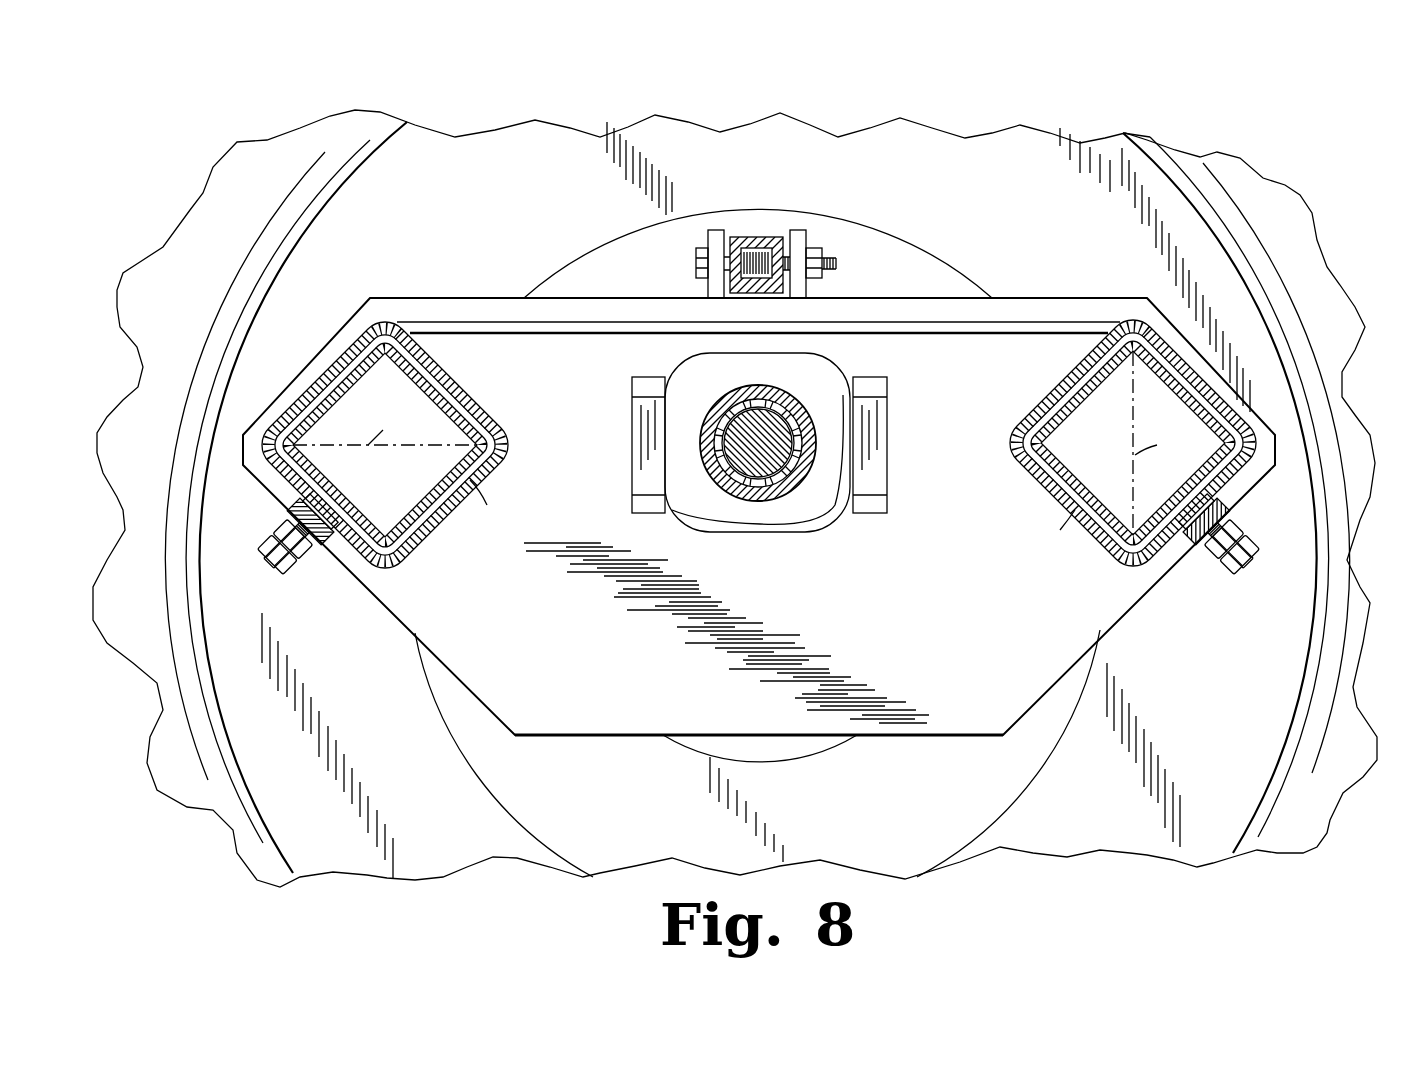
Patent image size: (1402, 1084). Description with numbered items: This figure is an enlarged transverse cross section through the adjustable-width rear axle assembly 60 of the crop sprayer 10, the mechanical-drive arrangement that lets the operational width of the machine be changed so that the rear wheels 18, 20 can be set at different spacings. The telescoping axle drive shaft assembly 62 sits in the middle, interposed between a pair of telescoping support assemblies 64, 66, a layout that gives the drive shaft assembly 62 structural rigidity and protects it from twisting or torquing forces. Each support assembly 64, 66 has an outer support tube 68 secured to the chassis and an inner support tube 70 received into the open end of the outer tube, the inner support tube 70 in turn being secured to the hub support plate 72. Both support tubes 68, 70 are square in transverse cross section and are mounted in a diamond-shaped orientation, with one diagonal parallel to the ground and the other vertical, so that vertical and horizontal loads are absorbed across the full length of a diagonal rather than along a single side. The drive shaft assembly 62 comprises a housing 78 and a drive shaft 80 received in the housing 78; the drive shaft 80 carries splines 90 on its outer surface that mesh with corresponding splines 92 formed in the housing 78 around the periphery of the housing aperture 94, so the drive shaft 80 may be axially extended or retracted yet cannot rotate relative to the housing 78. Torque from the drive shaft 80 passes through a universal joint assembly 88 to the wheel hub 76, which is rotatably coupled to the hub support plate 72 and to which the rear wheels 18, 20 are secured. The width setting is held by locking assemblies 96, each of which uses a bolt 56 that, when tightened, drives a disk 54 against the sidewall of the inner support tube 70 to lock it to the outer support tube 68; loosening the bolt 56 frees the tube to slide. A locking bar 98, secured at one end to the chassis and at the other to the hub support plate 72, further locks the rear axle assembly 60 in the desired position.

The crop sprayer 10 is at (1294, 132).
The adjustable-width rear axle assembly 60 is at (1074, 127).
The rear wheel 20 is at (286, 497).
The rear wheel 18 is at (1105, 852).
The wheel hub 76 is at (1028, 770).
The hub support plate 72 is at (980, 725).
The telescoping support assembly 66 is at (453, 377).
The telescoping support assembly 64 is at (1052, 380).
The inner support tube 70 is at (408, 541).
The outer support tube 68 is at (500, 435).
The disk 54 is at (297, 499).
The locking assembly 96 is at (317, 555).
The bolt 56 is at (270, 577).
The telescoping axle drive shaft assembly 62 is at (773, 457).
The housing 78 is at (795, 392).
The universal joint assembly 88 is at (877, 412).
The splines 90 is at (805, 487).
The housing aperture 94 is at (748, 512).
The splines 92 is at (790, 500).
The drive shaft 80 is at (815, 442).
The locking bar 98 is at (758, 237).